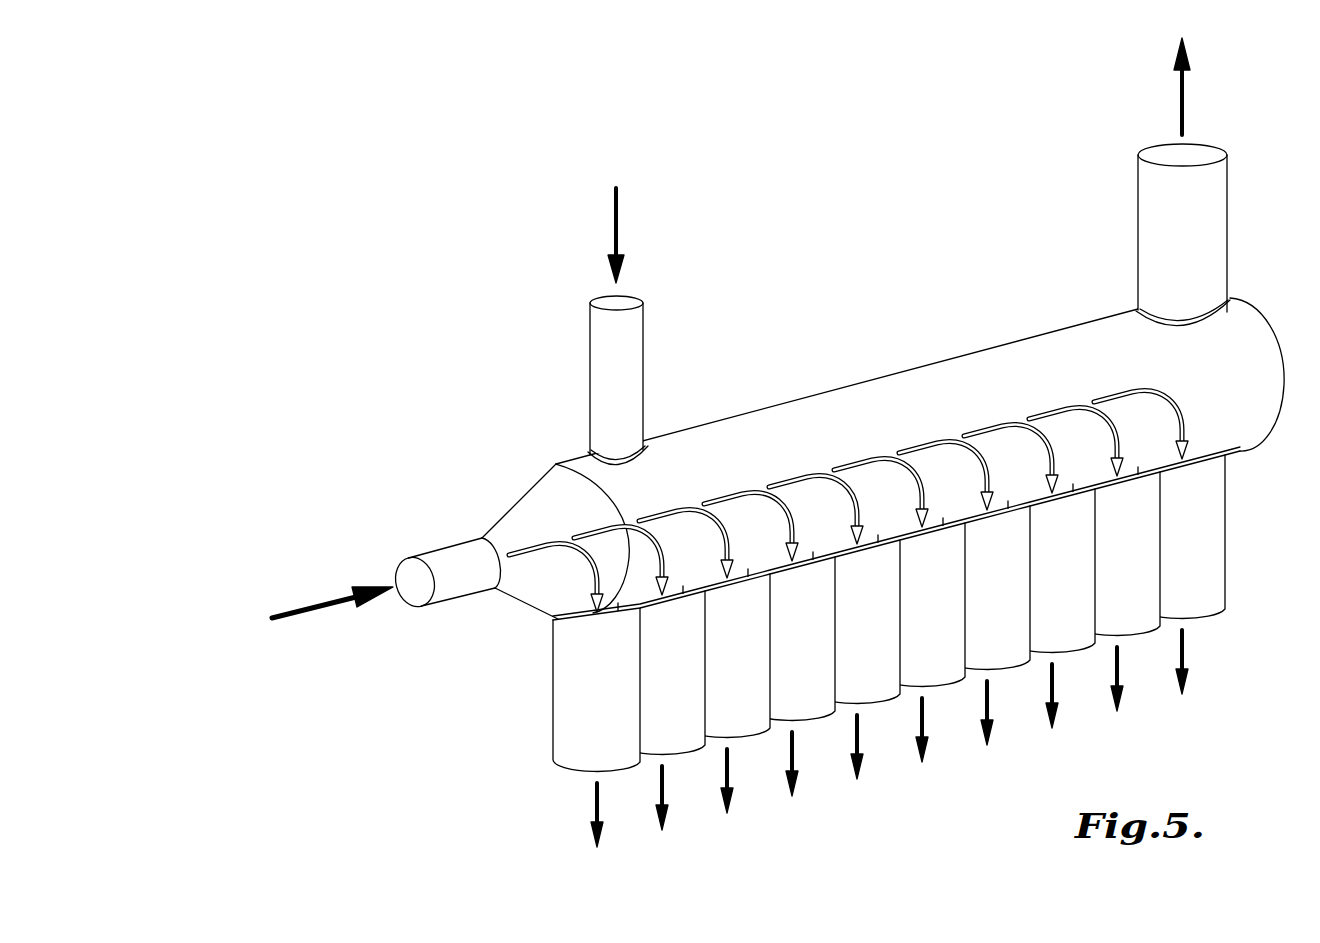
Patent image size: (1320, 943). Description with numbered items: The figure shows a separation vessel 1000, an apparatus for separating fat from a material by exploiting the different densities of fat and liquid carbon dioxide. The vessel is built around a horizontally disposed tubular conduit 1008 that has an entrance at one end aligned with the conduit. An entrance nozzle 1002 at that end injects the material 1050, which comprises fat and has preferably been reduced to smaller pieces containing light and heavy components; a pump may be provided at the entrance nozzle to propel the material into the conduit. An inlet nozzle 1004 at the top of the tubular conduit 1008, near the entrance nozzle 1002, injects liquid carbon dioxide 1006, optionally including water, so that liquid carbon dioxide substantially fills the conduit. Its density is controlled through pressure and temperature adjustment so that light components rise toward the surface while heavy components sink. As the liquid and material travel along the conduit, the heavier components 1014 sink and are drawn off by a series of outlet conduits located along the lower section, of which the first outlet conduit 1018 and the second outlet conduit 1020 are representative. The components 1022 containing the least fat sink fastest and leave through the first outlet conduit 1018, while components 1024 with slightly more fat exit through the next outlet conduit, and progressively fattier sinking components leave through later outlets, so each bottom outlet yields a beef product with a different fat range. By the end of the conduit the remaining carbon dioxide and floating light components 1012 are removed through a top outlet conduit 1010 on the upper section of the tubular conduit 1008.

The separation vessel 1000 is at (786, 240).
The entrance nozzle 1002 is at (447, 560).
The inlet nozzle 1004 is at (592, 395).
The liquid carbon dioxide 1006 is at (608, 225).
The tubular conduit 1008 is at (865, 517).
The top outlet conduit 1010 is at (1157, 228).
The light components 1012 is at (1175, 100).
The heavier components 1014 is at (572, 557).
The first outlet conduit 1018 is at (577, 693).
The second outlet conduit 1020 is at (662, 690).
The components comprising the least amount of fat 1022 is at (593, 805).
The components with slightly more fat 1024 is at (670, 790).
The material 1050 is at (305, 607).